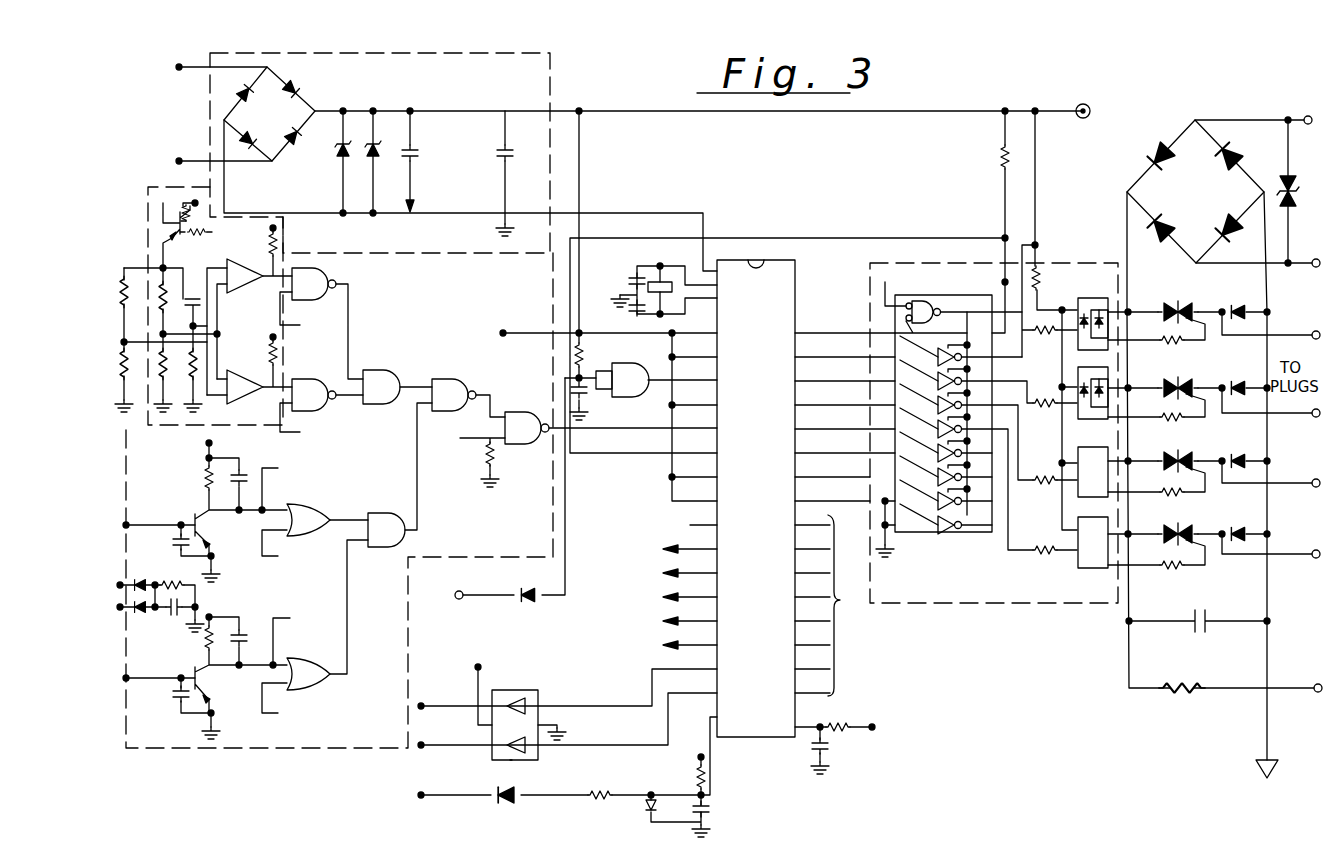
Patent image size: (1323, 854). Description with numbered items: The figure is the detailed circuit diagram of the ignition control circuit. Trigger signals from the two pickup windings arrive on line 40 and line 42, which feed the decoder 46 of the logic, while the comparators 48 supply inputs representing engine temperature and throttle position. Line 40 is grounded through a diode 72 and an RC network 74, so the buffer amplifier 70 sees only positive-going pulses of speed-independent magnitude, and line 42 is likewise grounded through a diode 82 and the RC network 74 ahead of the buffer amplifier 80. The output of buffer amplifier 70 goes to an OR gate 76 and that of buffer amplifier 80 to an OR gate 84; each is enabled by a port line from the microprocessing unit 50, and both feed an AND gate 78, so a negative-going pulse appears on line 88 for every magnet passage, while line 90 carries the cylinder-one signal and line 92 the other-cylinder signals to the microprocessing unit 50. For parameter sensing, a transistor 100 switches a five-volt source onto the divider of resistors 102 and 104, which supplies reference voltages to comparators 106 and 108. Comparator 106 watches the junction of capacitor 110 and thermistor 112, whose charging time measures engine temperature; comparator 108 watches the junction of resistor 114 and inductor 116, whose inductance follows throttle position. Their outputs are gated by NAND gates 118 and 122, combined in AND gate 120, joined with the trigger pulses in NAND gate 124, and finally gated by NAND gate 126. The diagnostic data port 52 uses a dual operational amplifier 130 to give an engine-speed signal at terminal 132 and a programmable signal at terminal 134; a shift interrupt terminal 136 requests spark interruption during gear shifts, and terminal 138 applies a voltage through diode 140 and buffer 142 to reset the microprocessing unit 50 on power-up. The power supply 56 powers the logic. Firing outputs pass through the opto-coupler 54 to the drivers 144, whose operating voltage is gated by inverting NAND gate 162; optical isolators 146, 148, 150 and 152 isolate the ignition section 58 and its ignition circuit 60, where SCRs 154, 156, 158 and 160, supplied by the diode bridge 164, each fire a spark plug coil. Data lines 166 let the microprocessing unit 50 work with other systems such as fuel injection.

The line 40 is at (140, 522).
The line 42 is at (146, 668).
The decoder 46 is at (408, 613).
The comparators 48 is at (146, 192).
The microprocessing unit 50 is at (754, 262).
The diagnostic data port 52 is at (530, 688).
The opto-coupler 54 is at (880, 262).
The power supply 56 is at (550, 60).
The ignition section 58 is at (1129, 663).
The ignition circuit 60 is at (1114, 662).
The buffer amplifier 70 is at (208, 524).
The diode 72 is at (136, 580).
The RC network 74 is at (186, 590).
The OR gate 76 is at (313, 506).
The AND gate 78 is at (384, 512).
The buffer amplifier 80 is at (204, 686).
The diode 82 is at (146, 612).
The OR gate 84 is at (319, 688).
The line 88 is at (417, 490).
The line 90 is at (266, 486).
The line 92 is at (286, 618).
The transistor 100 is at (170, 228).
The resistor 102 is at (160, 288).
The resistor 104 is at (160, 376).
The comparator 106 is at (244, 290).
The comparator 108 is at (242, 370).
The capacitor 110 is at (165, 285).
The thermistor 112 is at (193, 375).
The resistor 114 is at (120, 302).
The inductor 116 is at (120, 372).
The NAND gate 118 is at (320, 271).
The AND gate 120 is at (382, 370).
The NAND gate 122 is at (316, 379).
The NAND gate 124 is at (444, 378).
The NAND gate 126 is at (520, 410).
The dual operational amplifier 130 is at (520, 760).
The terminal 132 is at (426, 700).
The terminal 134 is at (426, 748).
The shift interrupt terminal 136 is at (422, 794).
The terminal 138 is at (460, 592).
The diode 140 is at (530, 597).
The buffer 142 is at (622, 372).
The drivers 144 is at (990, 534).
The optical isolator 146 is at (1092, 300).
The optical isolator 148 is at (1086, 376).
The optical isolator 150 is at (1086, 452).
The optical isolator 152 is at (1084, 529).
The silicon-controlled rectifier 154 is at (1186, 310).
The silicon-controlled rectifier 156 is at (1186, 387).
The silicon-controlled rectifier 158 is at (1186, 460).
The silicon-controlled rectifier 160 is at (1182, 533).
The inverting NAND gate 162 is at (921, 299).
The diode bridge 164 is at (1213, 197).
The data lines 166 is at (836, 652).